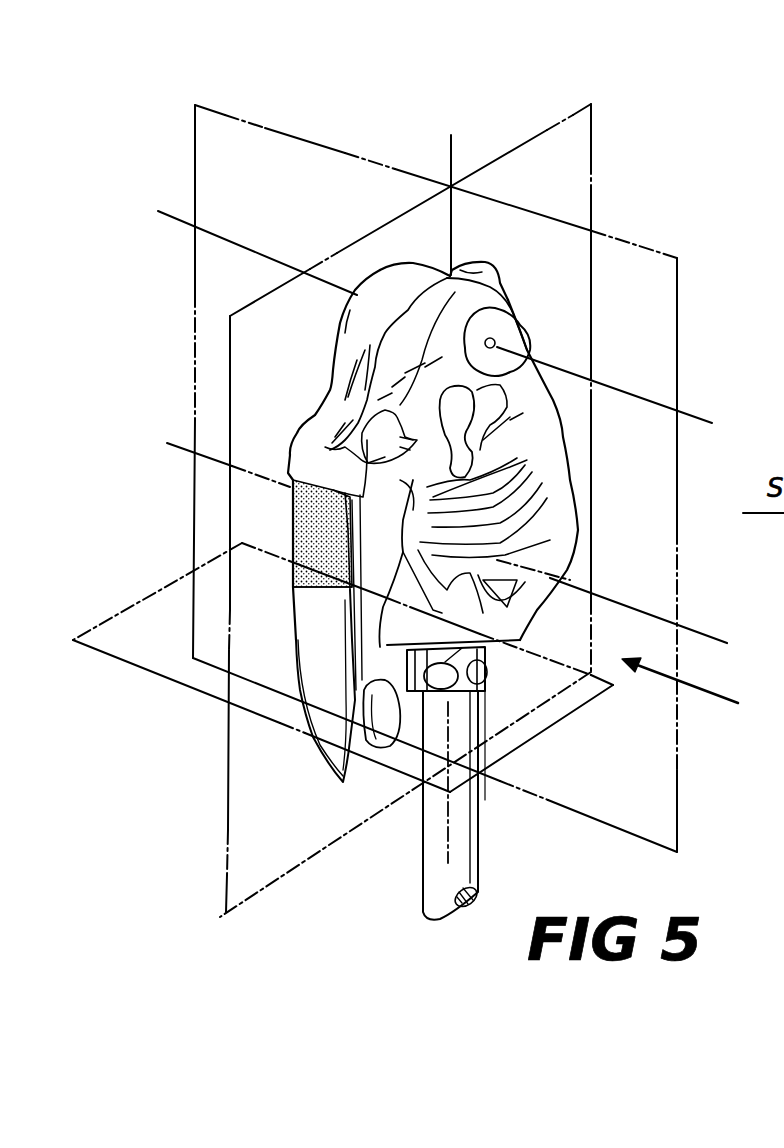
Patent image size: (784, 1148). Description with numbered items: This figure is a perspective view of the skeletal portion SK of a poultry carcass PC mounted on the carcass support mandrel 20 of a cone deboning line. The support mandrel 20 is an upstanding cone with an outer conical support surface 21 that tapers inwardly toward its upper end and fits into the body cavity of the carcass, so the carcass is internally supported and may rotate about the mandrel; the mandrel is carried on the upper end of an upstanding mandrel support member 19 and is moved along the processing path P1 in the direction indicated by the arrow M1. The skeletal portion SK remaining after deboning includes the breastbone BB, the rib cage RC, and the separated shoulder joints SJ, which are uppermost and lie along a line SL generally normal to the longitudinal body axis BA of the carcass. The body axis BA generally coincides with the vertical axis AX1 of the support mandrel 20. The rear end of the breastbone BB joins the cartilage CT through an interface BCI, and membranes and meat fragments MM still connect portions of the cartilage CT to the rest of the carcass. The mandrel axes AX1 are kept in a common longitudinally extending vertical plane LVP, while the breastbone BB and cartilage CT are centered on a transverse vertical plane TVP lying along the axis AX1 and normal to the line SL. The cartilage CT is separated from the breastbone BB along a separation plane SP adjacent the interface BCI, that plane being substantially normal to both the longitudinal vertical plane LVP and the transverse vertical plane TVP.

The longitudinal body axis BA is at (453, 150).
The longitudinally extending vertical plane LVP is at (677, 257).
The transverse vertical plane TVP is at (243, 892).
The separation plane SP is at (118, 662).
The line of the shoulder joints SL is at (690, 413).
The separated shoulder joint SJ is at (513, 309).
The skeletal portion SK is at (578, 482).
The poultry carcass PC is at (322, 358).
The breastbone BB is at (300, 522).
The interface between breastbone and cartilage BCI is at (300, 588).
The rib cage RC is at (550, 534).
The carcass support mandrel 20 is at (582, 580).
The outer conical support surface 21 is at (541, 613).
The processing path P1 is at (700, 632).
The direction of movement M1 is at (716, 670).
The cartilage CT is at (311, 645).
The membranes and meat fragments MM is at (388, 734).
The vertical axis of the support mandrel AX1 is at (447, 850).
The mandrel support member 19 is at (468, 878).